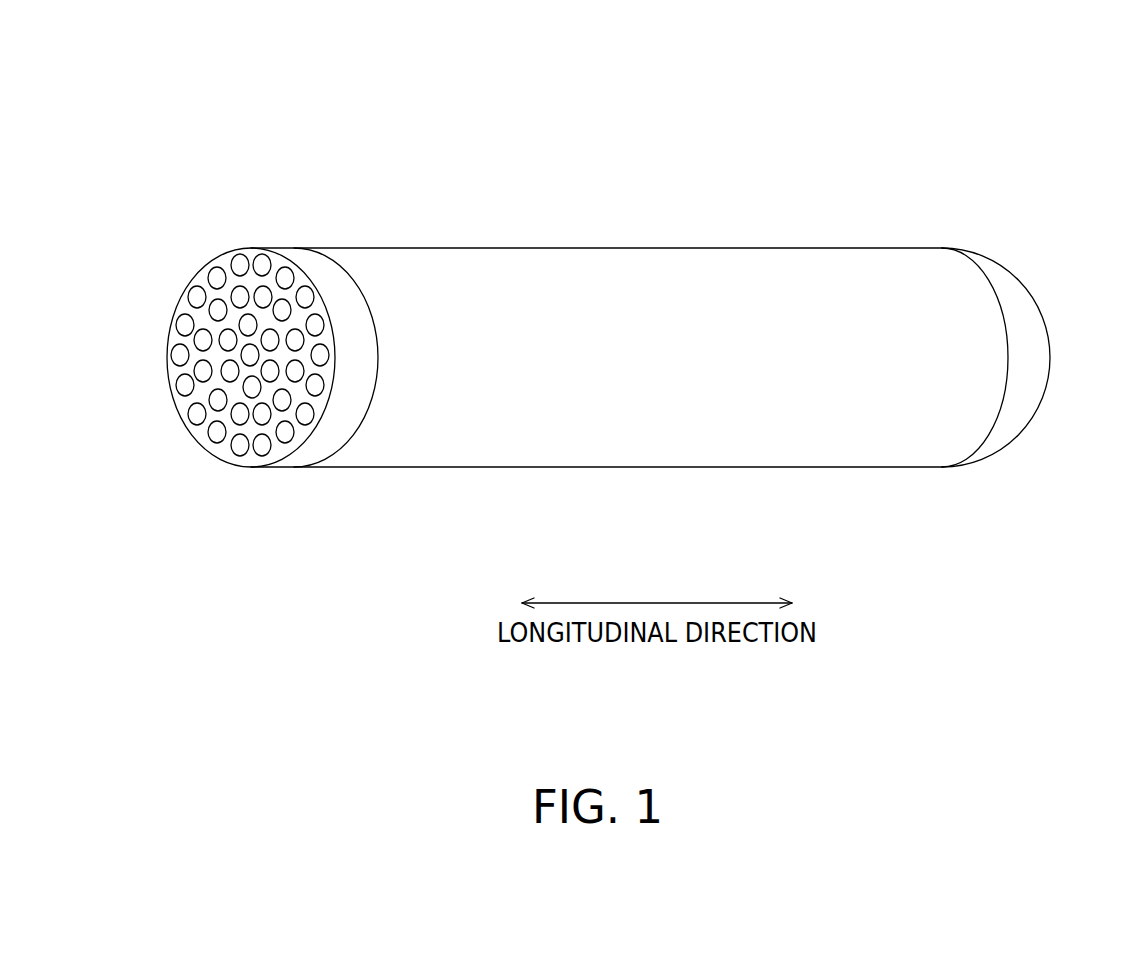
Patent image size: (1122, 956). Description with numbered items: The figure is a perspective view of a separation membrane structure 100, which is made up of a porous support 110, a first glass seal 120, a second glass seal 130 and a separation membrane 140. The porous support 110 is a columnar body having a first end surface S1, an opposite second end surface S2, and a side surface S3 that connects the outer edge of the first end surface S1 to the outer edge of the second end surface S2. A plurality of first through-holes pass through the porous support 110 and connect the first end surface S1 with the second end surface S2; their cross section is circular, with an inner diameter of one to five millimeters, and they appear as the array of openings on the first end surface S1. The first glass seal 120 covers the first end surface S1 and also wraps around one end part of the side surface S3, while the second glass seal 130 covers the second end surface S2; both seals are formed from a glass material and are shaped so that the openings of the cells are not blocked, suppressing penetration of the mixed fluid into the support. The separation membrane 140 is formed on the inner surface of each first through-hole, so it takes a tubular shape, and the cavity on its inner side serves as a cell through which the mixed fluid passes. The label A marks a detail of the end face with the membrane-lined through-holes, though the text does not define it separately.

The separation membrane structure 100 is at (636, 298).
The porous support 110 is at (596, 363).
The first glass seal 120 is at (303, 370).
The second glass seal 130 is at (1026, 402).
The separation membrane 140 is at (238, 440).
The first end surface S1 is at (197, 280).
The second end surface S2 is at (1050, 357).
The side surface S3 is at (677, 273).
The hole region A is at (316, 279).